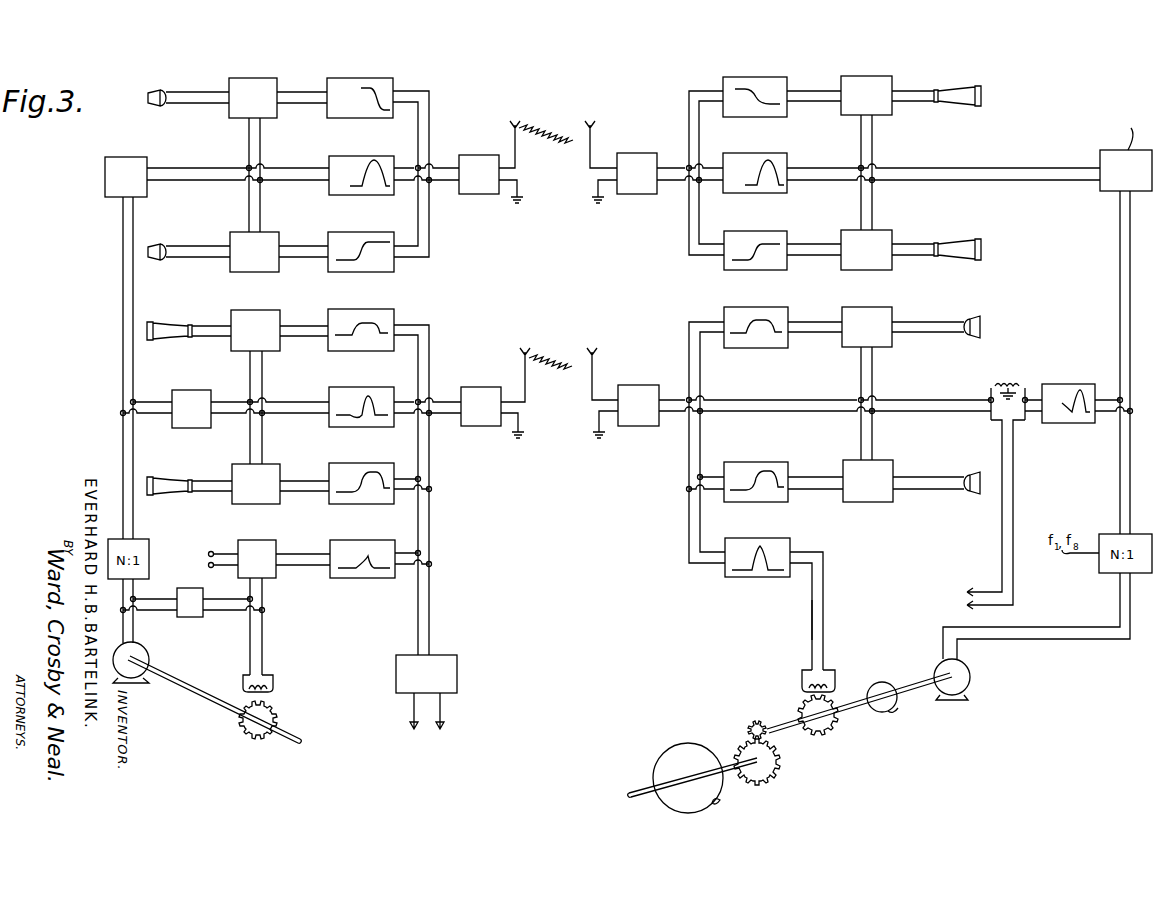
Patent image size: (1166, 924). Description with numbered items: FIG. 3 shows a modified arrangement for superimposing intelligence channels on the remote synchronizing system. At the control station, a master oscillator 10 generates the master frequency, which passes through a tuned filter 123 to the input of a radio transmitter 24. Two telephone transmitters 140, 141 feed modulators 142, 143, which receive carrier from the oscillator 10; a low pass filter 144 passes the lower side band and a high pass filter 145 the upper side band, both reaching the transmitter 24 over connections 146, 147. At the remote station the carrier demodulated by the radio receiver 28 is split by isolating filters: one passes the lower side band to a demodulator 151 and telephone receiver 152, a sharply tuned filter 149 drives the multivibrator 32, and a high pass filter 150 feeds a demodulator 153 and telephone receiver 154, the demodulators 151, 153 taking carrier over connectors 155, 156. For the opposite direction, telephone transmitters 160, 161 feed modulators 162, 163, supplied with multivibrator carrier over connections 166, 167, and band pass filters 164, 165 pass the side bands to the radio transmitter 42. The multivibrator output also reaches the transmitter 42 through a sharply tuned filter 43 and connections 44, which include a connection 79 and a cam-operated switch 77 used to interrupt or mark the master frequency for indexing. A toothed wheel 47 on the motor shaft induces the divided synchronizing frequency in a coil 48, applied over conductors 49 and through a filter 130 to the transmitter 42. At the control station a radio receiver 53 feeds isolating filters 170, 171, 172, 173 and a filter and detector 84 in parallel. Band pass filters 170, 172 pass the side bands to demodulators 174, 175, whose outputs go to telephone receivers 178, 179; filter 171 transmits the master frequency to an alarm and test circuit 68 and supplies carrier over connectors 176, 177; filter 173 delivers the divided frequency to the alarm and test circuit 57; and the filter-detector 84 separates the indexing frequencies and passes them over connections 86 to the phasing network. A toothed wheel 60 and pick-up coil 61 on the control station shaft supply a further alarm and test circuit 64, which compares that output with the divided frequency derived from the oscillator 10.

The master oscillator 10 is at (105, 173).
The radio transmitter 24 is at (477, 155).
The radio receiver 28 is at (635, 153).
The multivibrator 32 is at (1100, 156).
The radio transmitter 42 is at (637, 385).
The filter 43 is at (1064, 384).
The connections 44 is at (992, 421).
The toothed wheel 47 is at (820, 735).
The induction coil 48 is at (836, 681).
The conductors 49 is at (825, 608).
The radio receiver 53 is at (477, 387).
The alarm and test circuit 57 is at (273, 540).
The toothed wheel 60 is at (277, 716).
The pick-up coil 61 is at (275, 685).
The alarm and test circuit 64 is at (188, 617).
The alarm and test circuit 68 is at (194, 386).
The switch 77 is at (1017, 531).
The connection 79 is at (1002, 530).
The filter and detector 84 is at (457, 673).
The connections 86 is at (432, 710).
The filter 123 is at (358, 156).
The filter 130 is at (768, 538).
The telephone transmitter 140 is at (161, 90).
The telephone transmitter 141 is at (162, 244).
The modulator 142 is at (251, 78).
The modulator 143 is at (237, 273).
The low pass filter 144 is at (355, 78).
The high pass filter 145 is at (366, 232).
The connection 146 is at (432, 120).
The connection 147 is at (432, 221).
The filter 149 is at (757, 153).
The high pass filter 150 is at (758, 231).
The demodulator 151 is at (862, 76).
The telephone receiver 152 is at (951, 88).
The demodulator 153 is at (882, 271).
The telephone receiver 154 is at (955, 240).
The connector 155 is at (875, 140).
The connector 156 is at (875, 212).
The telephone transmitter 160 is at (965, 318).
The telephone transmitter 161 is at (965, 474).
The modulator 162 is at (846, 307).
The modulator 163 is at (857, 502).
The band pass filter 164 is at (770, 307).
The band pass filter 165 is at (768, 462).
The connection 166 is at (868, 377).
The connection 167 is at (868, 447).
The band pass filter 170 is at (352, 309).
The filter 171 is at (352, 387).
The band pass filter 172 is at (354, 463).
The filter 173 is at (355, 540).
The demodulator 174 is at (273, 310).
The demodulator 175 is at (237, 504).
The connector 176 is at (262, 384).
The connector 177 is at (262, 454).
The telephone receiver 178 is at (172, 322).
The telephone receiver 179 is at (172, 477).